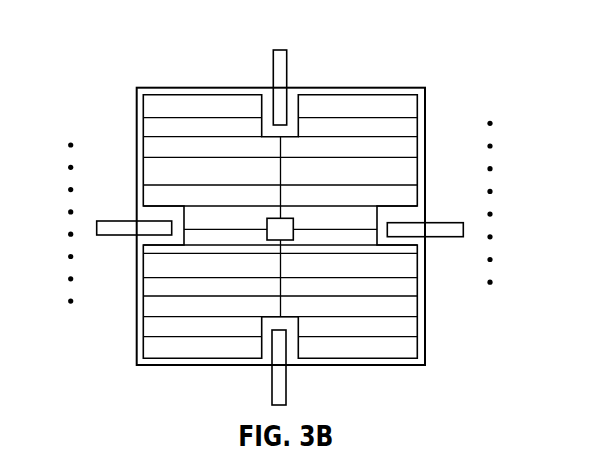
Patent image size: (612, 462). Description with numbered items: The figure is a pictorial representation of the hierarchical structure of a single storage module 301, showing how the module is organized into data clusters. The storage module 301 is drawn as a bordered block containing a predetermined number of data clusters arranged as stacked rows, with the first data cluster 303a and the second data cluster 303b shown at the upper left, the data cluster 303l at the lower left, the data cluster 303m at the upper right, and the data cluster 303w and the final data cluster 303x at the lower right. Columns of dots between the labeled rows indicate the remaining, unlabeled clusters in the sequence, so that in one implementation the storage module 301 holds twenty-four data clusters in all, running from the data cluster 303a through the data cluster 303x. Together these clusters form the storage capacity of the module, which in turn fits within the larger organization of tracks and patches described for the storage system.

The storage module 301 is at (353, 72).
The data cluster 303a is at (155, 112).
The data cluster 303b is at (155, 133).
The data cluster 303l is at (150, 348).
The data cluster 303m is at (403, 114).
The data cluster 303w is at (403, 332).
The data cluster 303x is at (403, 354).